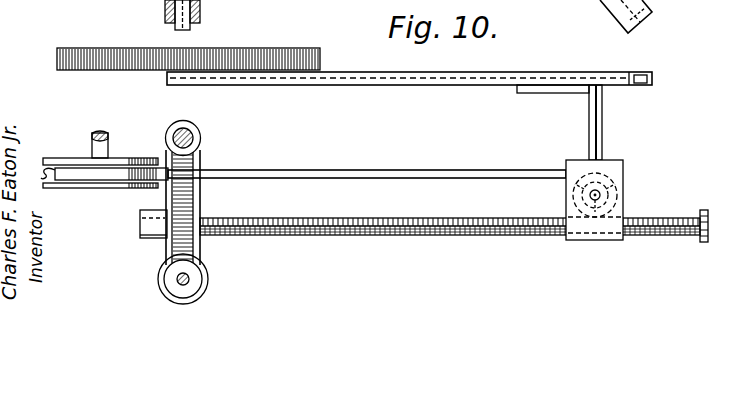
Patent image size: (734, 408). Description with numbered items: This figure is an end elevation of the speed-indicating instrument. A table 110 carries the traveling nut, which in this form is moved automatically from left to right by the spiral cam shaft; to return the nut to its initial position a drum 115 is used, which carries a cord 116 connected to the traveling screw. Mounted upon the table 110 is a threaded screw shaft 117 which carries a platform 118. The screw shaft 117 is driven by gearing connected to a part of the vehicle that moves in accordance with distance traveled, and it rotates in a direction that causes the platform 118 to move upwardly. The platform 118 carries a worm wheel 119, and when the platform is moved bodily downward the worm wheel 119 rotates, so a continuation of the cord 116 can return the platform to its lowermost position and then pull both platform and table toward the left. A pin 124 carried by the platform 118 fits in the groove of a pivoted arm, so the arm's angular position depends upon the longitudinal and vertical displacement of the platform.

The table 110 is at (200, 198).
The drum 115 is at (104, 143).
The cord 116 is at (392, 159).
The threaded screw shaft 117 is at (382, 234).
The platform 118 is at (607, 240).
The worm wheel 119 is at (617, 193).
The pin 124 is at (556, 93).